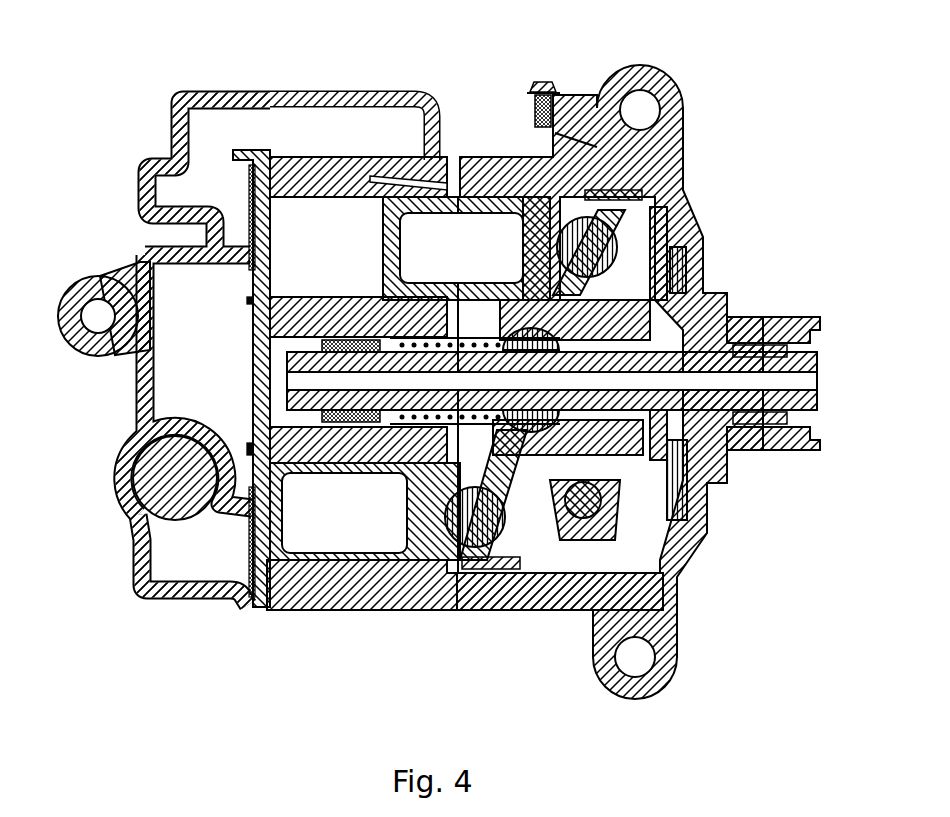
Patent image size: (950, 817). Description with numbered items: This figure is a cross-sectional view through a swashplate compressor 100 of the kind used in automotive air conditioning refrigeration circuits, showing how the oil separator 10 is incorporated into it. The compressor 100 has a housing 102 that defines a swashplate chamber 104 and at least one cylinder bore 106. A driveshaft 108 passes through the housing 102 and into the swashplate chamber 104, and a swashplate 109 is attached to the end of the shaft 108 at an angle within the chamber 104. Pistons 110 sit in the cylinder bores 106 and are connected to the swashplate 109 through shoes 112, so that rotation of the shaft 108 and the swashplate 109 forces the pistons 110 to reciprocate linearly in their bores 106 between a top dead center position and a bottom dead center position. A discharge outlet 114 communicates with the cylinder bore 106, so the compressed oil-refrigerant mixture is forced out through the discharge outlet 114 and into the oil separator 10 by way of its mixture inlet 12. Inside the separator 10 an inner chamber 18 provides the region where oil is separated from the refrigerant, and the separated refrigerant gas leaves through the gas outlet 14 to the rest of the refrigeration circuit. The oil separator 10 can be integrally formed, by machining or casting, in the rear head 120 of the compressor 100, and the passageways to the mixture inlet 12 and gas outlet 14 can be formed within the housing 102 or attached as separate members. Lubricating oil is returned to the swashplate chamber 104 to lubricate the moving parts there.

The oil separator 10 is at (138, 195).
The mixture inlet 12 is at (215, 165).
The gas outlet 14 is at (263, 132).
The inner chamber 18 is at (205, 140).
The swashplate compressor 100 is at (702, 130).
The housing 102 is at (438, 158).
The swashplate chamber 104 is at (635, 250).
The cylinder bore 106 is at (322, 215).
The driveshaft 108 is at (813, 367).
The swashplate 109 is at (568, 288).
The piston 110 is at (530, 213).
The shoe 112 is at (603, 205).
The discharge outlet 114 is at (240, 207).
The rear head 120 is at (213, 590).